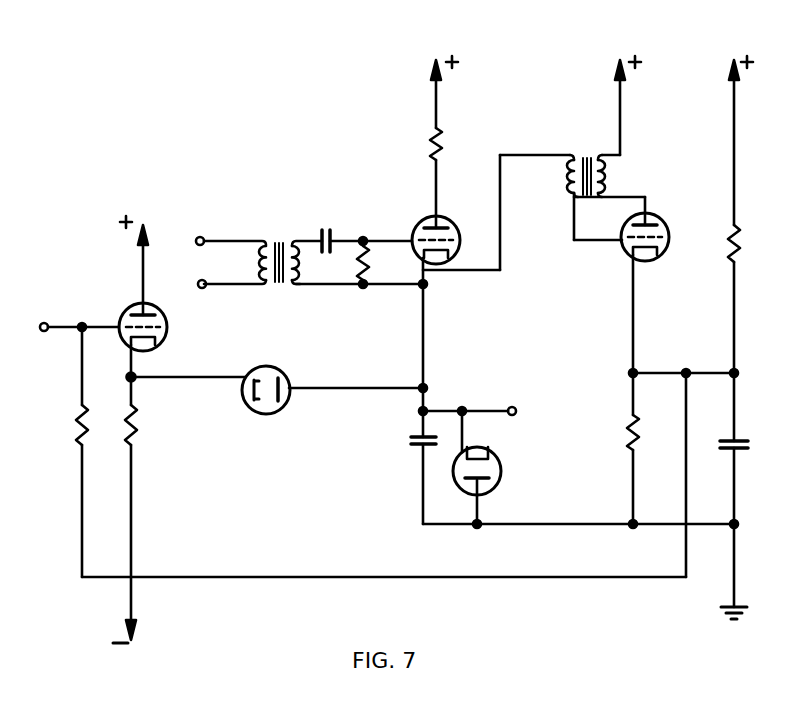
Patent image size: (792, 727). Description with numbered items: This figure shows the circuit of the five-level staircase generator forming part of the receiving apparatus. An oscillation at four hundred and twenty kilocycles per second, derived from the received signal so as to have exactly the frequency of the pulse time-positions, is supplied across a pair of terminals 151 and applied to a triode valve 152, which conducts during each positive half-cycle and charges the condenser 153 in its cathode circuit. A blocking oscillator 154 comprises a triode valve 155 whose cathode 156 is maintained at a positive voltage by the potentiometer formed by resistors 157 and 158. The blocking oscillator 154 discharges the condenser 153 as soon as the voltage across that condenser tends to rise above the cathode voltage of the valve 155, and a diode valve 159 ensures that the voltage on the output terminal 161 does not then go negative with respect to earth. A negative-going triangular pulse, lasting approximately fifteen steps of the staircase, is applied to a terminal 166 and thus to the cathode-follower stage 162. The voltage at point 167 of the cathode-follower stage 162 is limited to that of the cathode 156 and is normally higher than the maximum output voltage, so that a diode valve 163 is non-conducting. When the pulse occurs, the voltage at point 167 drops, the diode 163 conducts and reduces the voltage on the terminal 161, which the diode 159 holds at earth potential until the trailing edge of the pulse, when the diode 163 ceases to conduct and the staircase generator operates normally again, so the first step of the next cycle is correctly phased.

The pair of terminals 151 is at (199, 246).
The triode valve 152 is at (455, 222).
The condenser 153 is at (411, 447).
The blocking oscillator 154 is at (612, 232).
The triode valve 155 is at (659, 229).
The cathode 156 is at (647, 254).
The resistor 157 is at (728, 262).
The resistor 158 is at (645, 437).
The diode valve 159 is at (503, 471).
The output terminal 161 is at (517, 411).
The cathode-follower stage 162 is at (120, 436).
The diode valve 163 is at (270, 414).
The terminal 166 is at (45, 333).
The point 167 is at (129, 376).